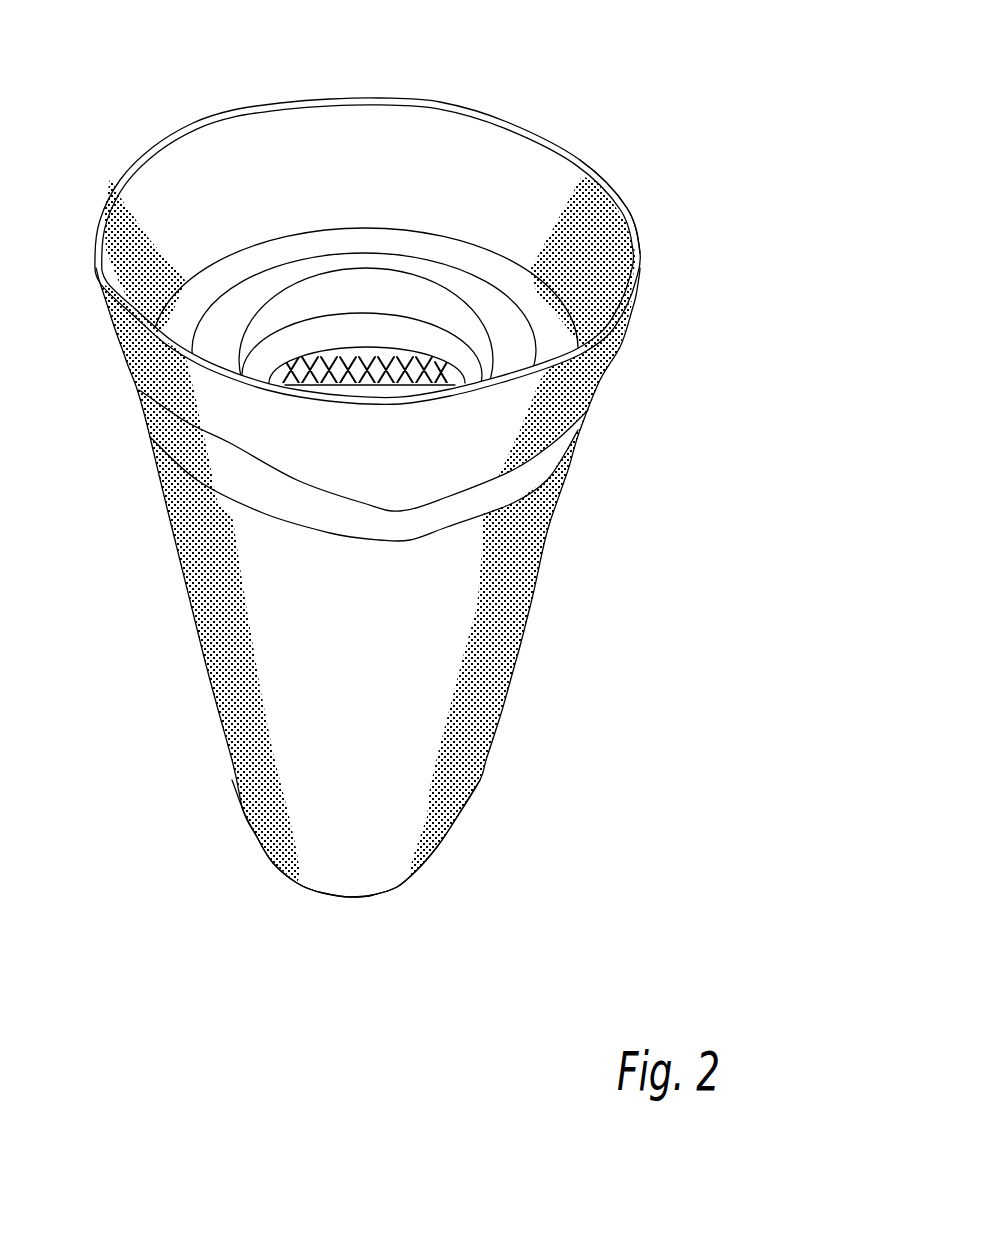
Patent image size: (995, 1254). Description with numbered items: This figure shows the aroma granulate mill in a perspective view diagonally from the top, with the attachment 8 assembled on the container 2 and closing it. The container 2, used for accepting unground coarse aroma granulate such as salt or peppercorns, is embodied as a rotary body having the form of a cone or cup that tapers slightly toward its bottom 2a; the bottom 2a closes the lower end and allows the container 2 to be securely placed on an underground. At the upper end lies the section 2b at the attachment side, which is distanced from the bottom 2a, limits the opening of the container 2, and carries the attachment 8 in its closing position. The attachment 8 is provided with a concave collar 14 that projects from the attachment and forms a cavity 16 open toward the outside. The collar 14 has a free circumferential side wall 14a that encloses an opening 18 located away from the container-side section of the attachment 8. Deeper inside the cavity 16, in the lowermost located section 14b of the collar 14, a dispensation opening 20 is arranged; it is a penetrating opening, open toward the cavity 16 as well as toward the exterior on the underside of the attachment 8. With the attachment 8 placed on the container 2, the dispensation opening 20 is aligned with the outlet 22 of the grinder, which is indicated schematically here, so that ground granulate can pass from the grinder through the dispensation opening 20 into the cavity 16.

The container 2 is at (375, 713).
The bottom 2a is at (395, 889).
The section at the attachment side 2b is at (565, 475).
The attachment 8 is at (400, 474).
The concave collar 14 is at (452, 463).
The circumferential side wall 14a is at (420, 103).
The lowermost located section of the collar 14b is at (470, 358).
The cavity 16 is at (555, 187).
The opening 18 is at (610, 187).
The dispensation opening 20 is at (392, 348).
The outlet of the grinder 22 is at (326, 362).